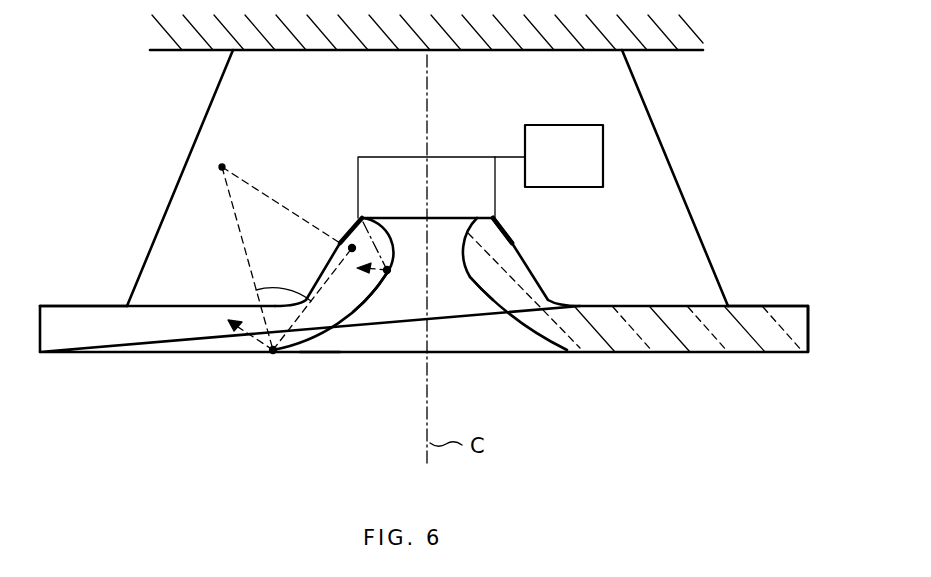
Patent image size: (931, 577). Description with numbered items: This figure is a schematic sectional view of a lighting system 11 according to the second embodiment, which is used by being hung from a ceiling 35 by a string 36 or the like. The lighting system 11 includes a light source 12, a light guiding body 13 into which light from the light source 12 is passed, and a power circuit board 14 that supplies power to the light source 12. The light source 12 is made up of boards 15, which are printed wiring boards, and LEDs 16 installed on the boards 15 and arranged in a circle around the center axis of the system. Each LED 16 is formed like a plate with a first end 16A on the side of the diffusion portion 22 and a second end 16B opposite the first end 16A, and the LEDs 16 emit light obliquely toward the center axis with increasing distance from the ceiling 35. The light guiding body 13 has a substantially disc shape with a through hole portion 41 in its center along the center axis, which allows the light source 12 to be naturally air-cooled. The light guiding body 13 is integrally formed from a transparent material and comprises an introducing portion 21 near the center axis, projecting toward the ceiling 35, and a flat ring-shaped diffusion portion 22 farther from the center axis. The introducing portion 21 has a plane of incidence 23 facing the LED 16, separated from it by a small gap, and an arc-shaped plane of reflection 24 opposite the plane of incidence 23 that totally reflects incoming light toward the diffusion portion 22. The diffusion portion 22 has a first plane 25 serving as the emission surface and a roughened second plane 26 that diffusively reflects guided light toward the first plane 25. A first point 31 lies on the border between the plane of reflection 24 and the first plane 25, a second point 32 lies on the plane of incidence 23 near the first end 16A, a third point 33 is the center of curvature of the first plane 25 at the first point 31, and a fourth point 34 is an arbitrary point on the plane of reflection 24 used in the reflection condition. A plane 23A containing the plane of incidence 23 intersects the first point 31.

The lighting system 11 is at (728, 130).
The light source 12 is at (533, 219).
The light guiding body 13 is at (218, 378).
The power circuit board 14 is at (572, 125).
The board 15 is at (502, 230).
The LED 16 is at (548, 243).
The first end 16A is at (342, 236).
The second end 16B is at (363, 219).
The introducing portion 21 is at (357, 313).
The diffusion portion 22 is at (138, 352).
The plane of incidence 23 is at (330, 263).
The plane containing the plane of incidence 23A is at (318, 352).
The plane of reflection 24 is at (382, 278).
The first plane 25 is at (83, 352).
The second plane 26 is at (82, 306).
The first point 31 is at (272, 352).
The second point 32 is at (352, 252).
The third point 33 is at (224, 167).
The fourth point 34 is at (388, 268).
The ceiling 35 is at (657, 52).
The string 36 is at (176, 184).
The through hole portion 41 is at (444, 224).